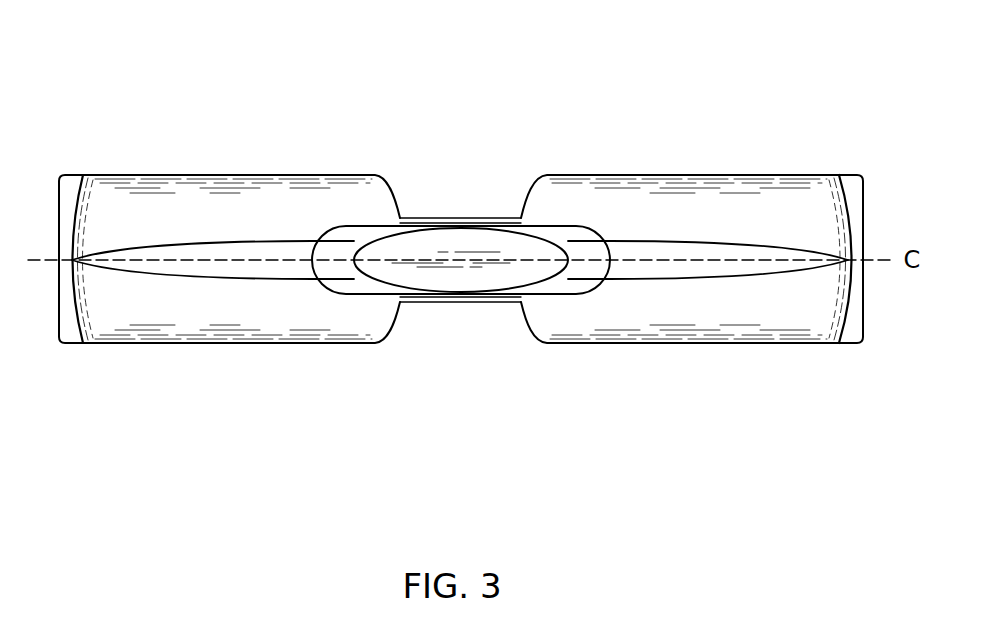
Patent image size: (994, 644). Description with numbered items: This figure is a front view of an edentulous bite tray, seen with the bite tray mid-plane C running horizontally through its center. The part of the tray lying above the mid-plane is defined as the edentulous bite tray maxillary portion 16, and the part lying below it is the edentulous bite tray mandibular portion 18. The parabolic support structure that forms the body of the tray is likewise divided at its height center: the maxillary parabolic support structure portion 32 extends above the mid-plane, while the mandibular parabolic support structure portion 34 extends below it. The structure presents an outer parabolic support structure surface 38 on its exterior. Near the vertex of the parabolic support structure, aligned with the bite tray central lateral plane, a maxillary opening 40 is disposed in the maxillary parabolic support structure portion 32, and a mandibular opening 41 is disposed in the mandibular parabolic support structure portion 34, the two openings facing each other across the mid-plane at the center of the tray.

The edentulous bite tray maxillary portion 16 is at (873, 127).
The edentulous bite tray mandibular portion 18 is at (873, 397).
The maxillary parabolic support structure portion 32 is at (626, 175).
The mandibular parabolic support structure portion 34 is at (626, 343).
The outer parabolic support structure surface 38 is at (223, 343).
The maxillary opening 40 is at (412, 193).
The mandibular opening 41 is at (413, 325).